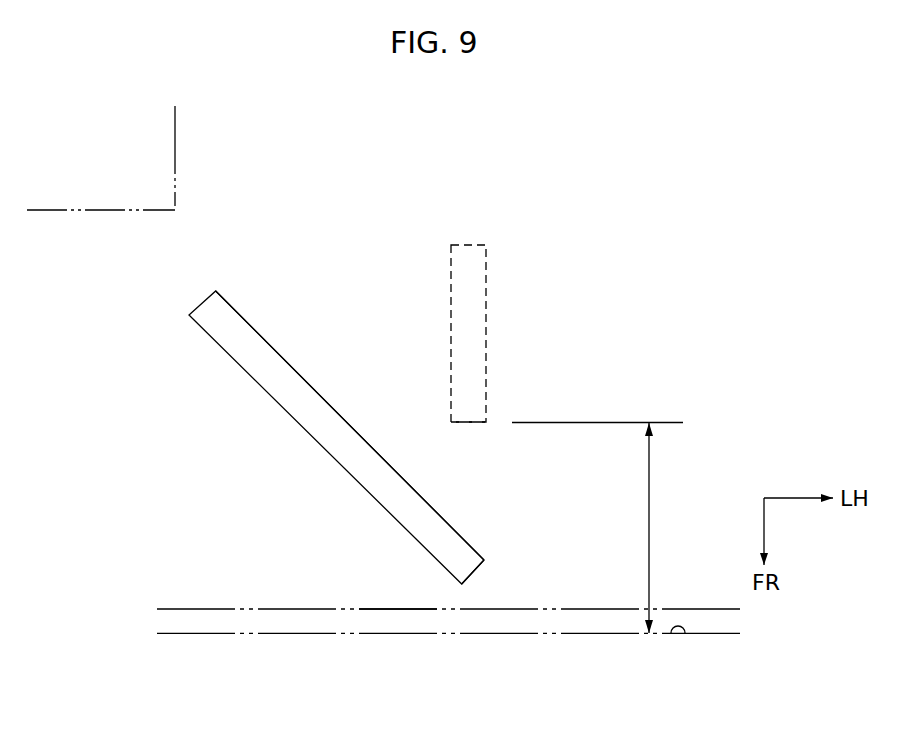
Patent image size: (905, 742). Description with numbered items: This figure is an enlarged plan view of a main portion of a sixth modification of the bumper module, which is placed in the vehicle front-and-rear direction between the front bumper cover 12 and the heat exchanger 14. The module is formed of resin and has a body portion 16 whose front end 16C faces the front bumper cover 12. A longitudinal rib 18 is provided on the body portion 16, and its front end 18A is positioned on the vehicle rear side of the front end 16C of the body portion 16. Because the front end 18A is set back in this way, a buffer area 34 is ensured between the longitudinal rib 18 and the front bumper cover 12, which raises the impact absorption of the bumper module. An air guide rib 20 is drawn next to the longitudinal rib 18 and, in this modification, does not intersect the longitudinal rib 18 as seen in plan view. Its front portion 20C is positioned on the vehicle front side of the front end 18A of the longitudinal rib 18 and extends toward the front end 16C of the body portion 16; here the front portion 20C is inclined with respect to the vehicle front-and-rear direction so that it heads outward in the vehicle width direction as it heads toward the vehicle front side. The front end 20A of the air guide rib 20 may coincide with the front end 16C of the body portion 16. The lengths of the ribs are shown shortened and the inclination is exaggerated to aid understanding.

The front bumper cover 12 is at (683, 635).
The heat exchanger 14 is at (175, 145).
The body portion 16 is at (388, 609).
The front end of the body portion 16C is at (495, 609).
The longitudinal rib 18 is at (489, 333).
The front end of the longitudinal rib 18A is at (473, 423).
The air guide rib 20 is at (316, 390).
The front end of the air guide rib 20A is at (477, 573).
The front portion of the air guide rib 20C is at (457, 528).
The buffer area 34 is at (649, 521).